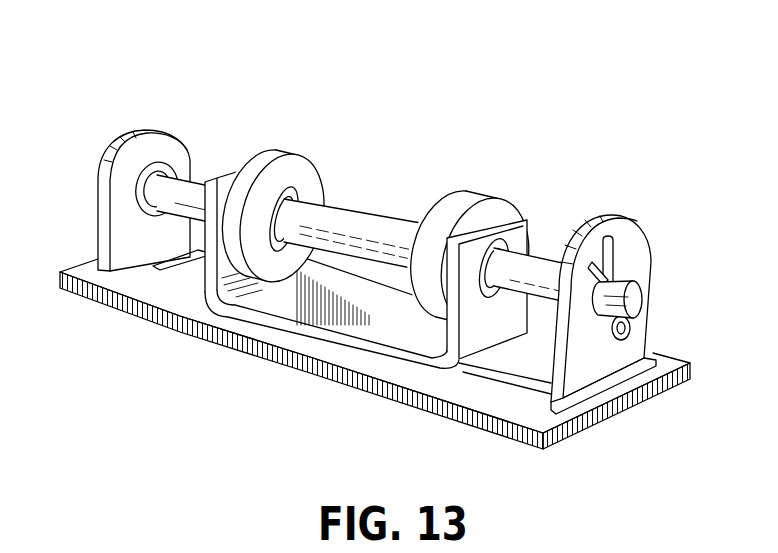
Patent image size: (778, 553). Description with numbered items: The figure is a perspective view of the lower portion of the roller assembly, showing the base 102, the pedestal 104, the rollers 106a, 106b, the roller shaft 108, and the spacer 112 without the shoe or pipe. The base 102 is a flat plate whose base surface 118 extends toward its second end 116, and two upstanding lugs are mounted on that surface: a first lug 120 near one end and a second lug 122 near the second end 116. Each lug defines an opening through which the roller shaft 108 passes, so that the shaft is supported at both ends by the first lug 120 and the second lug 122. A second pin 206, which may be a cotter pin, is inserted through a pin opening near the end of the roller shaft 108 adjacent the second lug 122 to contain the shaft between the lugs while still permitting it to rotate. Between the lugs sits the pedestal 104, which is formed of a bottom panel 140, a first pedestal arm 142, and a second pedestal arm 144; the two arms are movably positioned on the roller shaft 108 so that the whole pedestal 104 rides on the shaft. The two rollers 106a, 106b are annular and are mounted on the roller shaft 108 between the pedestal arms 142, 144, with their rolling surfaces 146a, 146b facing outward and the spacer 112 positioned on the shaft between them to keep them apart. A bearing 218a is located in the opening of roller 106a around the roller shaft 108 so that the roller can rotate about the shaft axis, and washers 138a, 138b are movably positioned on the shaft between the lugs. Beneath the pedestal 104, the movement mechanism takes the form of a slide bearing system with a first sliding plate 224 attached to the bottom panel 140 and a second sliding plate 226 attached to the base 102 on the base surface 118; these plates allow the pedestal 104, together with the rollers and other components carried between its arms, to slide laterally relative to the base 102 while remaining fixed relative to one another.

The base 102 is at (388, 347).
The pedestal 104 is at (378, 282).
The roller 106a is at (293, 205).
The roller 106b is at (475, 194).
The roller shaft 108 is at (188, 178).
The spacer 112 is at (330, 205).
The second end 116 is at (630, 398).
The base surface 118 is at (715, 336).
The first lug 120 is at (143, 134).
The second lug 122 is at (635, 230).
The washer 138a is at (123, 178).
The washer 138b is at (477, 290).
The bottom panel 140 is at (403, 360).
The first pedestal arm 142 is at (205, 177).
The second pedestal arm 144 is at (558, 212).
The rolling surface 146a is at (252, 160).
The rolling surface 146b is at (452, 196).
The second pin 206 is at (620, 277).
The bearing 218a is at (292, 250).
The first sliding plate 224 is at (187, 263).
The second sliding plate 226 is at (500, 352).